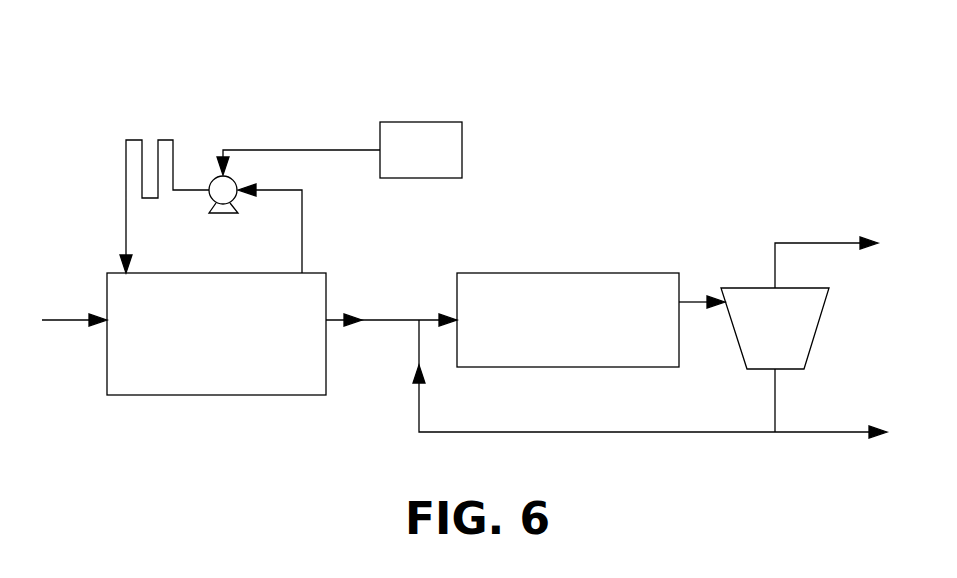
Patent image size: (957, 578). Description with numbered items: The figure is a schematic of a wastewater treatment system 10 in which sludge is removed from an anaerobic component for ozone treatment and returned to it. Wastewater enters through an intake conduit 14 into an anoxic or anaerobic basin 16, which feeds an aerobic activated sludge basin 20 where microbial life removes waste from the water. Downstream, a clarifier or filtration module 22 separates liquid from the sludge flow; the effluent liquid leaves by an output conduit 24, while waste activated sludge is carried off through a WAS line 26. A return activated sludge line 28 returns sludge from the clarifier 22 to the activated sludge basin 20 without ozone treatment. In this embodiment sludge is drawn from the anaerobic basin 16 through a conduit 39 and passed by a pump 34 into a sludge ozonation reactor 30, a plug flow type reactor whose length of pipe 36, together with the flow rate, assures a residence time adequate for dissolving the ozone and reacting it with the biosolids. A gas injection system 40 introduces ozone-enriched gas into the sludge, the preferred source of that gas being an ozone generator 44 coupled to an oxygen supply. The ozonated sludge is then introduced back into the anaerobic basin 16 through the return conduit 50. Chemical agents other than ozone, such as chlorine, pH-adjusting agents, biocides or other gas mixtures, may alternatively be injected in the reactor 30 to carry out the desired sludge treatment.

The wastewater treatment system 10 is at (672, 124).
The intake conduit 14 is at (392, 308).
The anoxic and/or anaerobic basin 16 is at (180, 397).
The activated sludge basin 20 is at (566, 360).
The clarifier or filtration module 22 is at (805, 325).
The output conduit 24 is at (813, 243).
The waste activated sludge (WAS) line 26 is at (830, 430).
The return activated sludge (RAS) line 28 is at (645, 430).
The sludge ozonation reactor 30 is at (100, 132).
The pump 34 is at (225, 214).
The pipe 36 is at (173, 140).
The conduit 39 is at (303, 233).
The gas injection system 40 is at (298, 90).
The ozone generator 44 is at (453, 148).
The return conduit 50 is at (126, 233).